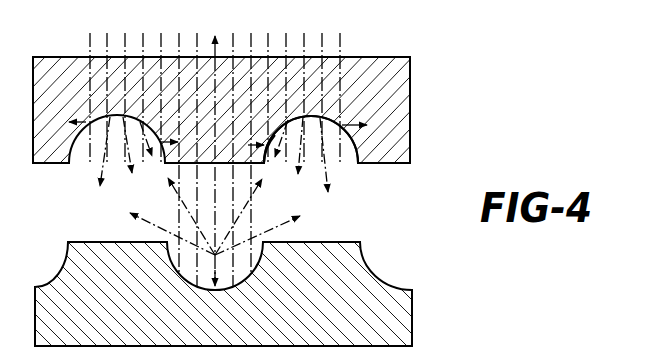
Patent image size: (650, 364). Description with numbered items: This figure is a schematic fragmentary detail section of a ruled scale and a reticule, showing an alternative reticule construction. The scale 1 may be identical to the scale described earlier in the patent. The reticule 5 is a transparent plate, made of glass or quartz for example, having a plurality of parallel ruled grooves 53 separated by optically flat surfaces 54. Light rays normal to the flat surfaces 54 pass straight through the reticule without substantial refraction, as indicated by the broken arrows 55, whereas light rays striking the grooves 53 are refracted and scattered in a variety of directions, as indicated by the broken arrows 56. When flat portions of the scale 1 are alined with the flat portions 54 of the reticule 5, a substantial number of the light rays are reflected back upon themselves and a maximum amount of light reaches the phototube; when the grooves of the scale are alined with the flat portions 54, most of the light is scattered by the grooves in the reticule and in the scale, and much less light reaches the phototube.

The reticule 5 is at (372, 62).
The scale 1 is at (336, 240).
The ruled grooves 53 is at (349, 153).
The optically flat surfaces 54 is at (243, 168).
The broken arrows 55 is at (177, 217).
The broken arrows 56 is at (323, 179).